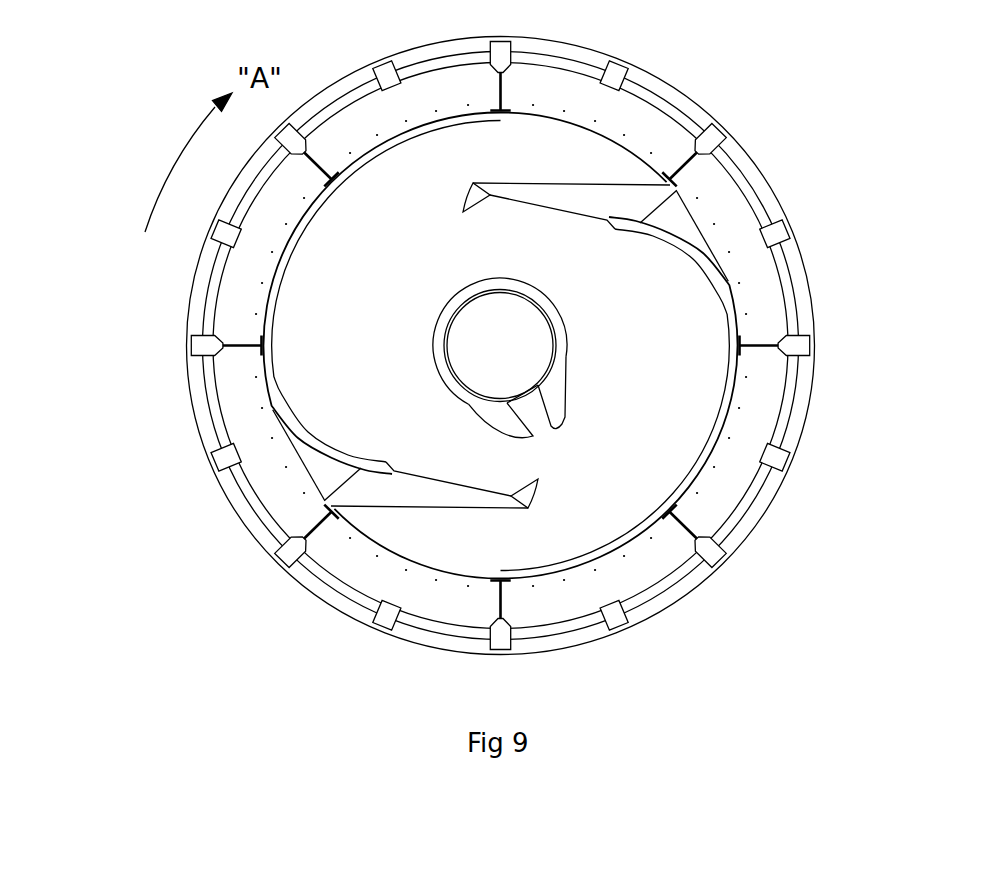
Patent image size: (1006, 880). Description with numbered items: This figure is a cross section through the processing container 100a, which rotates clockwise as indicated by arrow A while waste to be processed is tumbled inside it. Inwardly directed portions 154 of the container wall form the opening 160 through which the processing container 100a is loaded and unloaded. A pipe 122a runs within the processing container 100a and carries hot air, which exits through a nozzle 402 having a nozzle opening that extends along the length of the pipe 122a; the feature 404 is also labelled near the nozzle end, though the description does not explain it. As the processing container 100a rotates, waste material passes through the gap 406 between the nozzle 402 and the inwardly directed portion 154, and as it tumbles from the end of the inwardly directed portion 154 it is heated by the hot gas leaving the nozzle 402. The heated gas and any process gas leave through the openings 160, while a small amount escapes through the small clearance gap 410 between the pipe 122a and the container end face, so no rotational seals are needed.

The processing container 100a is at (824, 145).
The small clearance gap 410 is at (549, 310).
The pipe 122a is at (513, 345).
The nozzle 402 is at (550, 397).
The vane tip 404 is at (530, 458).
The gap 406 is at (542, 428).
The inwardly directed portions 154 is at (397, 495).
The opening 160 is at (450, 537).